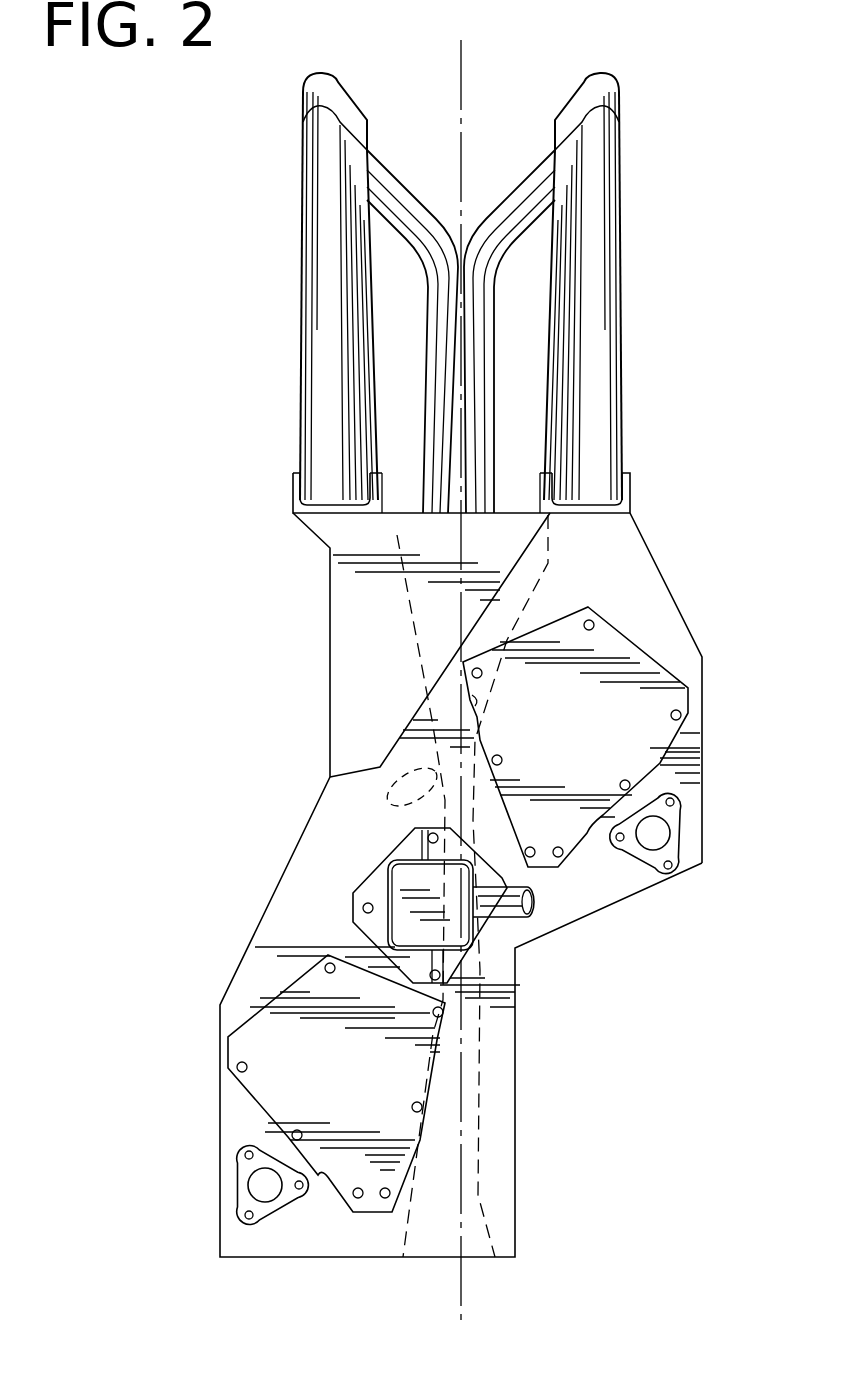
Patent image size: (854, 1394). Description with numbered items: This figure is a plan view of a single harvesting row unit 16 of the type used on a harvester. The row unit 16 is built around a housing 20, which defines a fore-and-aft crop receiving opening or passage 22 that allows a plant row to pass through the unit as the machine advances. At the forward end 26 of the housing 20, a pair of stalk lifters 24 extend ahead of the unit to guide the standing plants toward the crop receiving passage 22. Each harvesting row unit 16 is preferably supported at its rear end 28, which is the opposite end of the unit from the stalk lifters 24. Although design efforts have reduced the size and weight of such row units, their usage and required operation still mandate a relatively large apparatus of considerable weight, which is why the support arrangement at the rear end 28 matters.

The harvesting row unit 16 is at (287, 686).
The housing 20 is at (630, 600).
The crop receiving opening or passage 22 is at (443, 871).
The stalk lifters 24 is at (348, 116).
The forward end 26 is at (368, 515).
The rear end 28 is at (318, 1258).